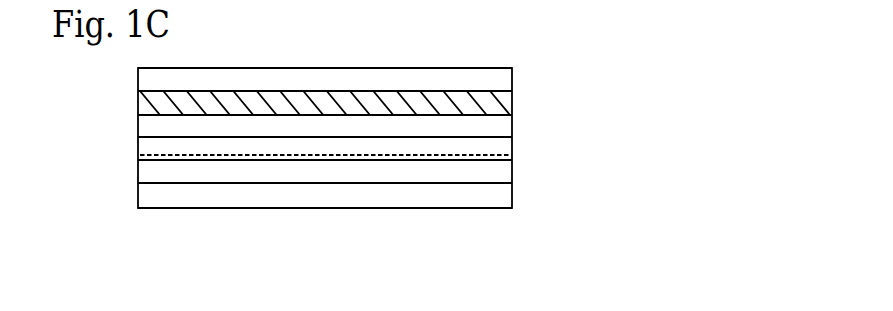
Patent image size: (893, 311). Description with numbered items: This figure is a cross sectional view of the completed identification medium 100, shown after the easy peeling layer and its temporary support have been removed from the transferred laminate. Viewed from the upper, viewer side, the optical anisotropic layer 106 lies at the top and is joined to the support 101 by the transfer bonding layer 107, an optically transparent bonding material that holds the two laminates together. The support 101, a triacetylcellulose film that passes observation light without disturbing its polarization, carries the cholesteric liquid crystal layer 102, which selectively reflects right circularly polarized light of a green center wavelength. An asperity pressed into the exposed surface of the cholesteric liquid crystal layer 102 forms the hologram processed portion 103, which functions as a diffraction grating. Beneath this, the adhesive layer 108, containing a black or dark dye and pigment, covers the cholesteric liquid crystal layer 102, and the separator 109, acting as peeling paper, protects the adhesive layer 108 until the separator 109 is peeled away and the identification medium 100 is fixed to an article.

The identification medium 100 is at (123, 122).
The support 101 is at (500, 123).
The cholesteric liquid crystal layer 102 is at (180, 145).
The hologram processed portion 103 is at (283, 158).
The optical anisotropic layer 106 is at (502, 78).
The transfer bonding layer 107 is at (503, 98).
The adhesive layer 108 is at (497, 172).
The separator 109 is at (487, 198).